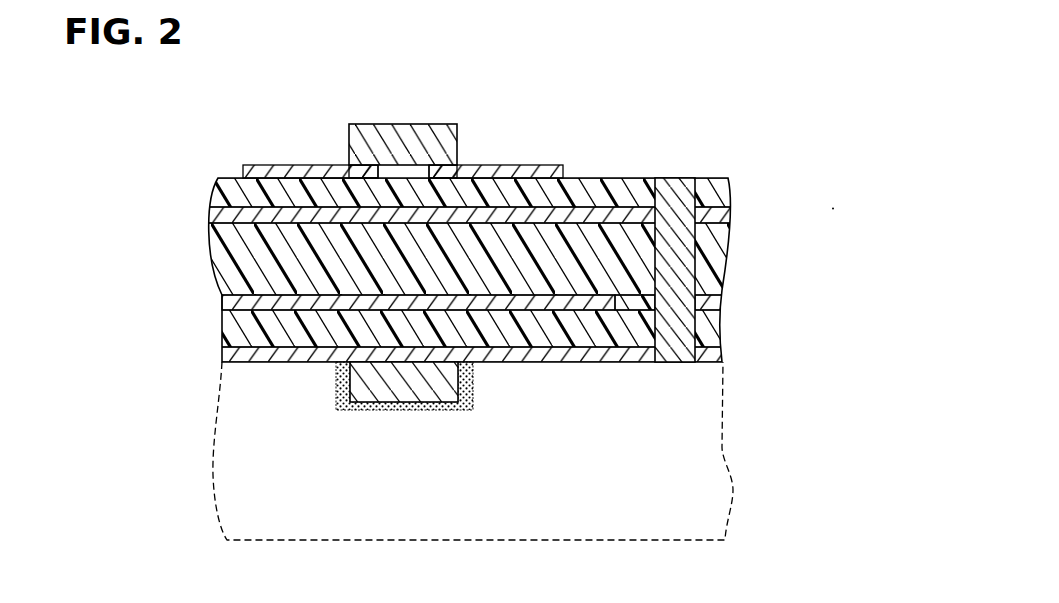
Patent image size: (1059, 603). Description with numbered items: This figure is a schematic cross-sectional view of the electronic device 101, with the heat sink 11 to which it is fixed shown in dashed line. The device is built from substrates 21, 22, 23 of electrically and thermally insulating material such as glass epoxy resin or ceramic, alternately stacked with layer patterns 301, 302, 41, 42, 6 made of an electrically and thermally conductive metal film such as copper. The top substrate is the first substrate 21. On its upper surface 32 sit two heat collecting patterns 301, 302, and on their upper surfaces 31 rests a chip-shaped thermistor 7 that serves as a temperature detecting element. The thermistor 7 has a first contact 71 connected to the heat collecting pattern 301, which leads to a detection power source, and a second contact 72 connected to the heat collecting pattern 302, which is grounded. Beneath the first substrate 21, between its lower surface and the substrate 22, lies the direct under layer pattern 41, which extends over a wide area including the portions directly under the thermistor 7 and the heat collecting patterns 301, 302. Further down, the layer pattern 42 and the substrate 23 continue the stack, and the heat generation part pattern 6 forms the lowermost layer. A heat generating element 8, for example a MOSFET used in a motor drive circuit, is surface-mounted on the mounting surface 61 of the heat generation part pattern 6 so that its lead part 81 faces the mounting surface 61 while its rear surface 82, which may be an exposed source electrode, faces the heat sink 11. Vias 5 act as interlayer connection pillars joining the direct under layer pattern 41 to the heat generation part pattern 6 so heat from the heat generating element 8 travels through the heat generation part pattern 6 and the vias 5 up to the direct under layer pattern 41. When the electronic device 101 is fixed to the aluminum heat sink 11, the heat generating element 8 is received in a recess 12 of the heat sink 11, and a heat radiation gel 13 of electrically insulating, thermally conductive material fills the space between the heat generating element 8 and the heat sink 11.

The electronic device 101 is at (678, 68).
The thermistor 7 is at (387, 130).
The first contact 71 is at (356, 172).
The second contact 72 is at (457, 172).
The heat collecting pattern 301 is at (272, 172).
The heat collecting pattern 302 is at (510, 172).
The upper surface of heat collecting pattern 31 is at (547, 167).
The upper surface (first surface) of first substrate 32 is at (553, 197).
The first substrate 21 is at (228, 200).
The substrate 22 is at (233, 258).
The substrate 23 is at (242, 333).
The direct under layer pattern 41 is at (225, 213).
The layer pattern 42 is at (235, 302).
The via 5 is at (683, 273).
The heat generation part pattern 6 is at (233, 353).
The mounting surface 61 is at (630, 362).
The heat generating element 8 is at (387, 388).
The lead part 81 is at (372, 352).
The rear surface 82 is at (431, 410).
The heat sink 11 is at (238, 488).
The recess 12 is at (474, 400).
The heat radiation gel 13 is at (337, 388).